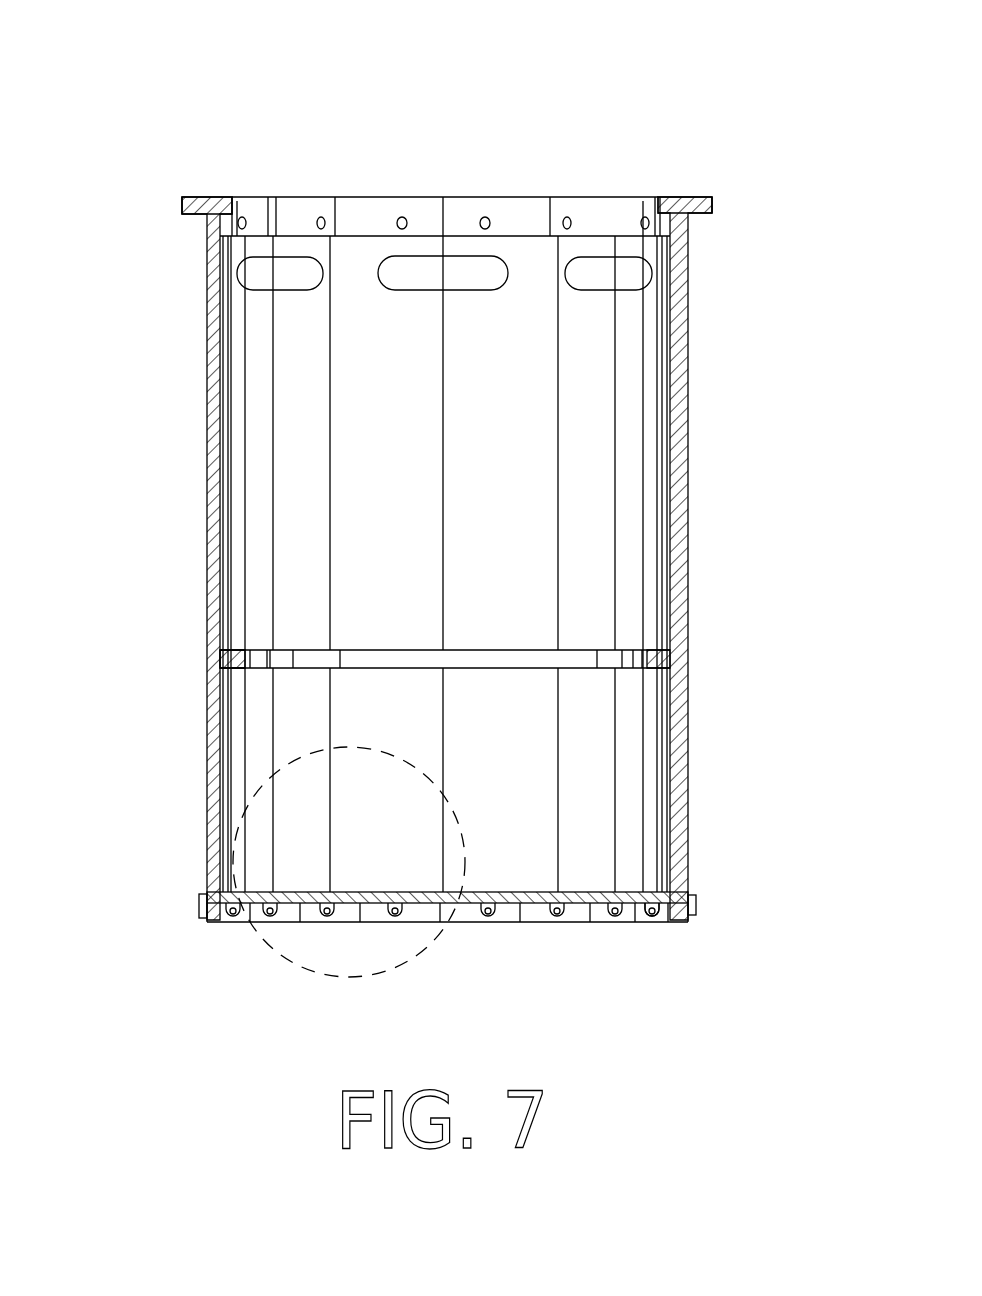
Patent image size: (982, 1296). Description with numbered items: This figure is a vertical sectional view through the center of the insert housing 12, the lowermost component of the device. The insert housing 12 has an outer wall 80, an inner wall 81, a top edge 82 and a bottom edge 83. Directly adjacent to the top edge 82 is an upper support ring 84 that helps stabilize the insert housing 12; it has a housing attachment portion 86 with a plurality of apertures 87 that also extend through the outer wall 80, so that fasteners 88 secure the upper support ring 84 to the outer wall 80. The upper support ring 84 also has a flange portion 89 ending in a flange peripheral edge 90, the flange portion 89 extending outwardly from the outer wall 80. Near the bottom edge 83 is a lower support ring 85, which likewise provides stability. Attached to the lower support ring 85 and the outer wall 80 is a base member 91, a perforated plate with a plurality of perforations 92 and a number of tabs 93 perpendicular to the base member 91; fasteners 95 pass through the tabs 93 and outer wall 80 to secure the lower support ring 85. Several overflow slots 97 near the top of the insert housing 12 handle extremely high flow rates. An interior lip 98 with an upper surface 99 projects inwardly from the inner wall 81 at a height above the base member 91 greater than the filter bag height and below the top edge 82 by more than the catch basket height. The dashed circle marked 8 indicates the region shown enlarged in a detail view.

The insert housing 12 is at (775, 428).
The outer wall 80 is at (688, 530).
The inner wall 81 is at (668, 580).
The top edge 82 is at (220, 198).
The bottom edge 83 is at (205, 920).
The upper support ring 84 is at (500, 172).
The lower support ring 85 is at (630, 910).
The housing attachment portion 86 is at (272, 220).
The apertures 87 is at (322, 216).
The fasteners 88 is at (404, 217).
The flange portion 89 is at (186, 199).
The flange peripheral edge 90 is at (182, 205).
The base member 91 is at (533, 905).
The perforations 92 is at (315, 920).
The tabs 93 is at (235, 920).
The fasteners 95 is at (696, 905).
The overflow slots 97 is at (412, 292).
The interior lip 98 is at (312, 660).
The upper surface 99 is at (232, 652).
The detail circle 8 is at (349, 862).